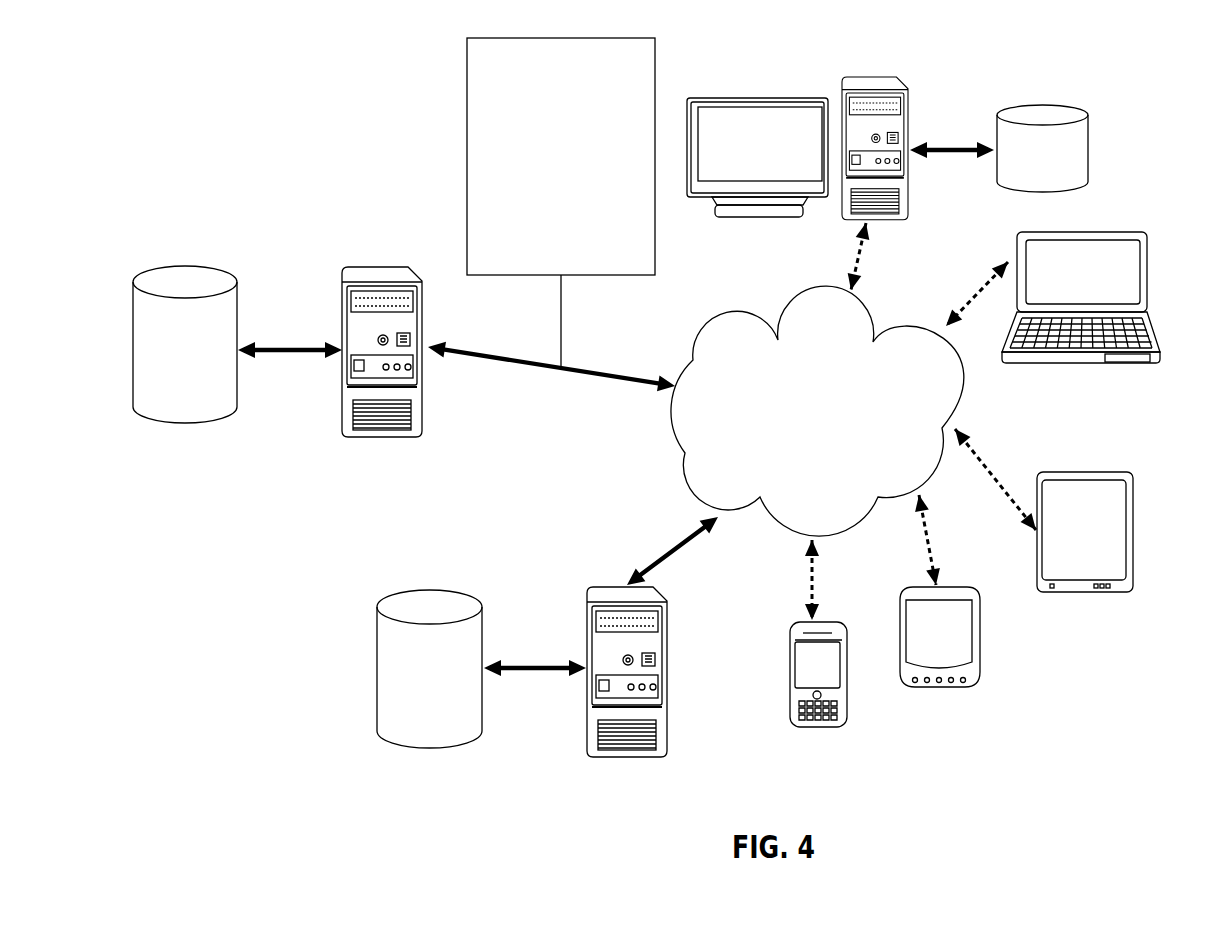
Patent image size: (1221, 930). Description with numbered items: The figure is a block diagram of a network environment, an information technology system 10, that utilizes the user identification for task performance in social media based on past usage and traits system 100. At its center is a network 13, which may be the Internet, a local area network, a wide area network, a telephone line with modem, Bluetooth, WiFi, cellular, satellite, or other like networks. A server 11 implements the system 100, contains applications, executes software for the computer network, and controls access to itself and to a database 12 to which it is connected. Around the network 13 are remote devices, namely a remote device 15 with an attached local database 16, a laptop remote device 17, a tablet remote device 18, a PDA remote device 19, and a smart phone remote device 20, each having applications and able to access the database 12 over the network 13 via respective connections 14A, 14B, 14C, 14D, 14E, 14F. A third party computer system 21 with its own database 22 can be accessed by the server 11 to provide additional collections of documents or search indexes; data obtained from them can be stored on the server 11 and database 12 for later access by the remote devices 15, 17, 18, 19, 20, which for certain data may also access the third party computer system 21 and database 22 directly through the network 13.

The information technology system 10 is at (781, 21).
The system 100 is at (546, 258).
The server 11 is at (382, 267).
The database 12 is at (193, 266).
The network 13 is at (738, 310).
The connection 14A is at (852, 258).
The connection 14B is at (971, 297).
The connection 14C is at (997, 471).
The connection 14D is at (923, 548).
The connection 14E is at (808, 580).
The connection 14F is at (670, 546).
The remote device 15 is at (870, 78).
The local database 16 is at (1090, 152).
The remote device 17 is at (1148, 273).
The remote device 18 is at (1117, 472).
The remote device 19 is at (981, 656).
The remote device 20 is at (790, 683).
The third party computer system 21 is at (668, 658).
The database 22 is at (430, 590).